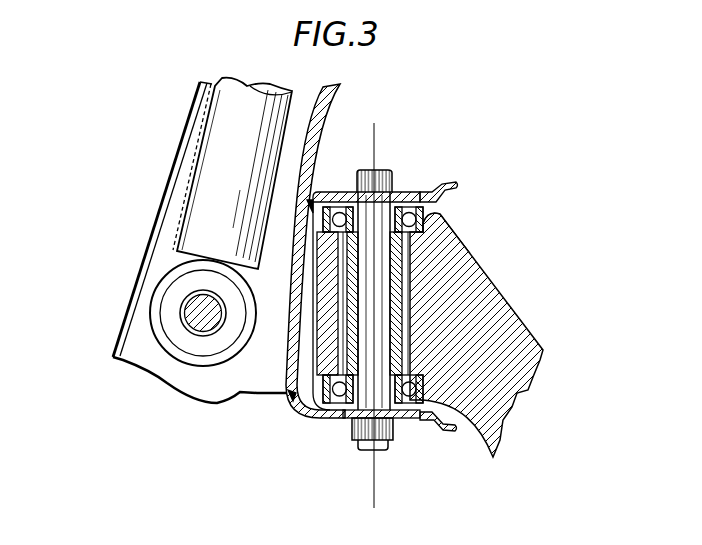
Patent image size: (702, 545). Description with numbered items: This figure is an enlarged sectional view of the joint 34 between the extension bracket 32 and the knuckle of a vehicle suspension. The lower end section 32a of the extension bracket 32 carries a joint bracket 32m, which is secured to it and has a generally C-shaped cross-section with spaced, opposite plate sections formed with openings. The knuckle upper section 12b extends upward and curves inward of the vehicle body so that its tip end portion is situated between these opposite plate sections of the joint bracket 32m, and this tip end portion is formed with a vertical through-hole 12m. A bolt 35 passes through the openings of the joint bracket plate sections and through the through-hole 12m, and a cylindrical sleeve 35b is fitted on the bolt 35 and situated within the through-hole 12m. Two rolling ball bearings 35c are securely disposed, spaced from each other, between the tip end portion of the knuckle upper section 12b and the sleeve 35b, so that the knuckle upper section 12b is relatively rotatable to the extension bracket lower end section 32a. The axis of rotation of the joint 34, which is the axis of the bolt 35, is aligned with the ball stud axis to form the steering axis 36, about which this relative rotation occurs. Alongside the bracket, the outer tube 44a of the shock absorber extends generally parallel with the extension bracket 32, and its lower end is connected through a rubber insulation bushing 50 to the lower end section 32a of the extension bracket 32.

The knuckle upper section 12b is at (510, 390).
The vertical through-hole 12m is at (413, 270).
The extension bracket 32 is at (178, 147).
The extension bracket lower end section 32a is at (126, 312).
The joint bracket 32m is at (338, 410).
The joint 34 is at (345, 175).
The pivot shaft 35 is at (391, 175).
The cylindrical sleeve 35b is at (413, 313).
The rolling bearings 35c is at (426, 216).
The steering axis 36 is at (375, 493).
The outer tube 44a is at (212, 86).
The insulation bushing 50 is at (185, 343).